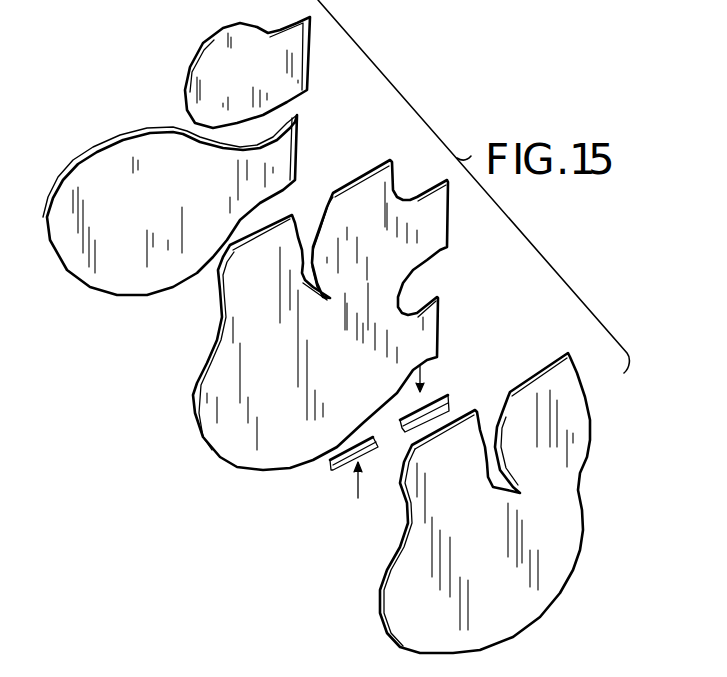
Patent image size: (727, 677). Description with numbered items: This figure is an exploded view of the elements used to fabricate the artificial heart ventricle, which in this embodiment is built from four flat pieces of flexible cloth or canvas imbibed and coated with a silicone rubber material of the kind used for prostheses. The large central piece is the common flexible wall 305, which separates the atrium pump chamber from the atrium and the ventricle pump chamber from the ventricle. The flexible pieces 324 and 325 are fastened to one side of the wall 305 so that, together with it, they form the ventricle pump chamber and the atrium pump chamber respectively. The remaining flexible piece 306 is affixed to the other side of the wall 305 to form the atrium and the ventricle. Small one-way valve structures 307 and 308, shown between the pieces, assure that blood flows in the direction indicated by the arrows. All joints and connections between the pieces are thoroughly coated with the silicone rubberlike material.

The flexible piece 324 is at (165, 217).
The flexible piece 325 is at (267, 88).
The central common flexible wall 305 is at (250, 315).
The flexible piece 306 is at (398, 620).
The one-way valve structure 307 is at (468, 390).
The one-way valve structure 308 is at (312, 477).